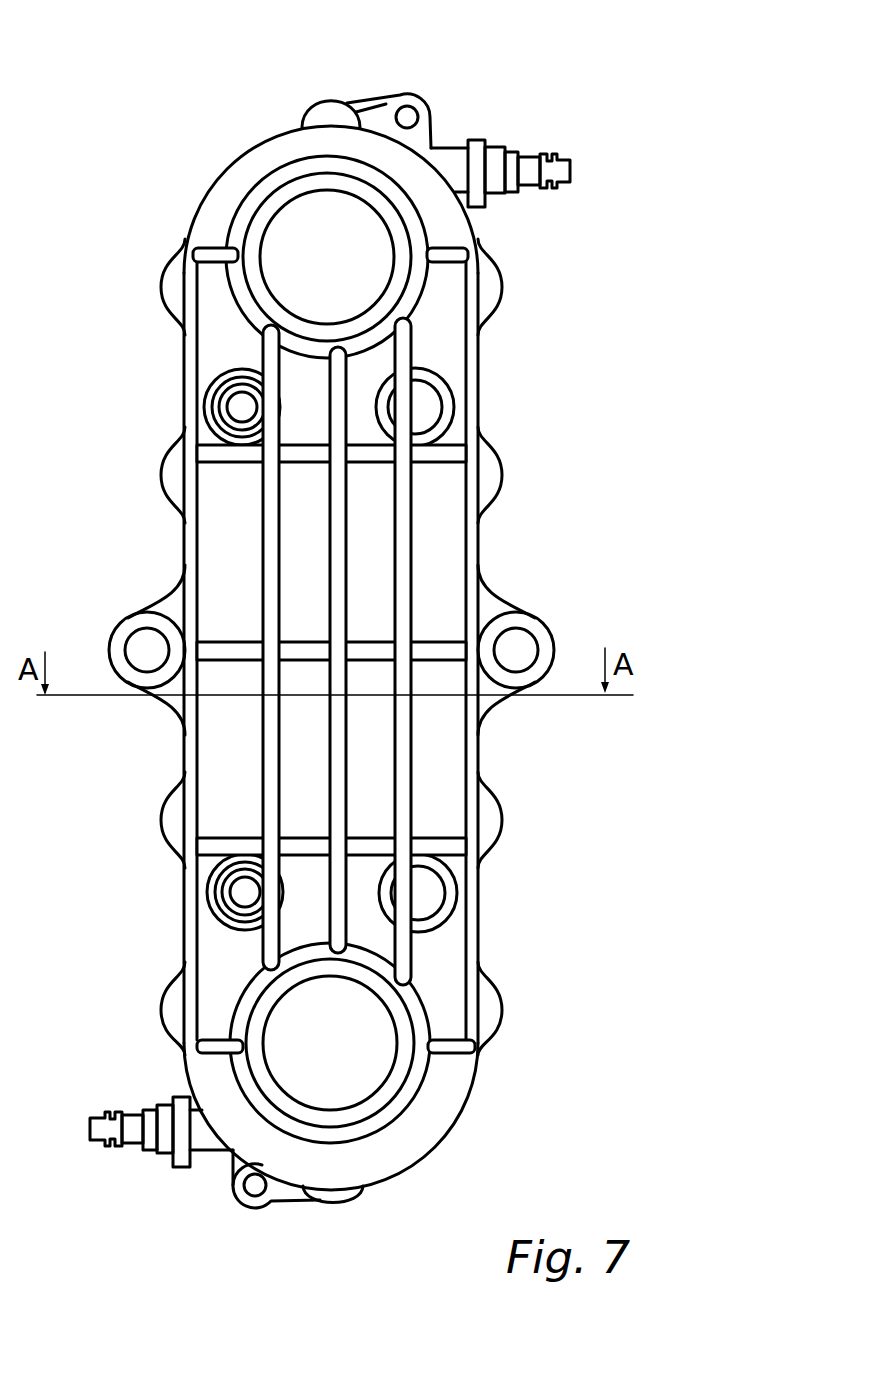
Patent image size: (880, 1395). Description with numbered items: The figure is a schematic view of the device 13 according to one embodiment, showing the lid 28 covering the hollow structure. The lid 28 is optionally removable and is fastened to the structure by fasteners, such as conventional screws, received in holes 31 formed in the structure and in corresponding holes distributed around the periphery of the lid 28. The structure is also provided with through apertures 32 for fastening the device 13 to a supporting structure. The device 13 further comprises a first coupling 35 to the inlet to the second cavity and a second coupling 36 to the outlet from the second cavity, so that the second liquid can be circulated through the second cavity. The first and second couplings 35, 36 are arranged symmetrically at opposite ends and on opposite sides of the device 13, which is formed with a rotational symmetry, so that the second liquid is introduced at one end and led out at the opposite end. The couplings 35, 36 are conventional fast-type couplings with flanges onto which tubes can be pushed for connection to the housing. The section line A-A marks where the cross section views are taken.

The device 13 is at (348, 633).
The lid 28 is at (457, 558).
The holes 31 is at (257, 1187).
The through apertures 32 is at (140, 643).
The first coupling 35 is at (571, 166).
The second coupling 36 is at (95, 1117).